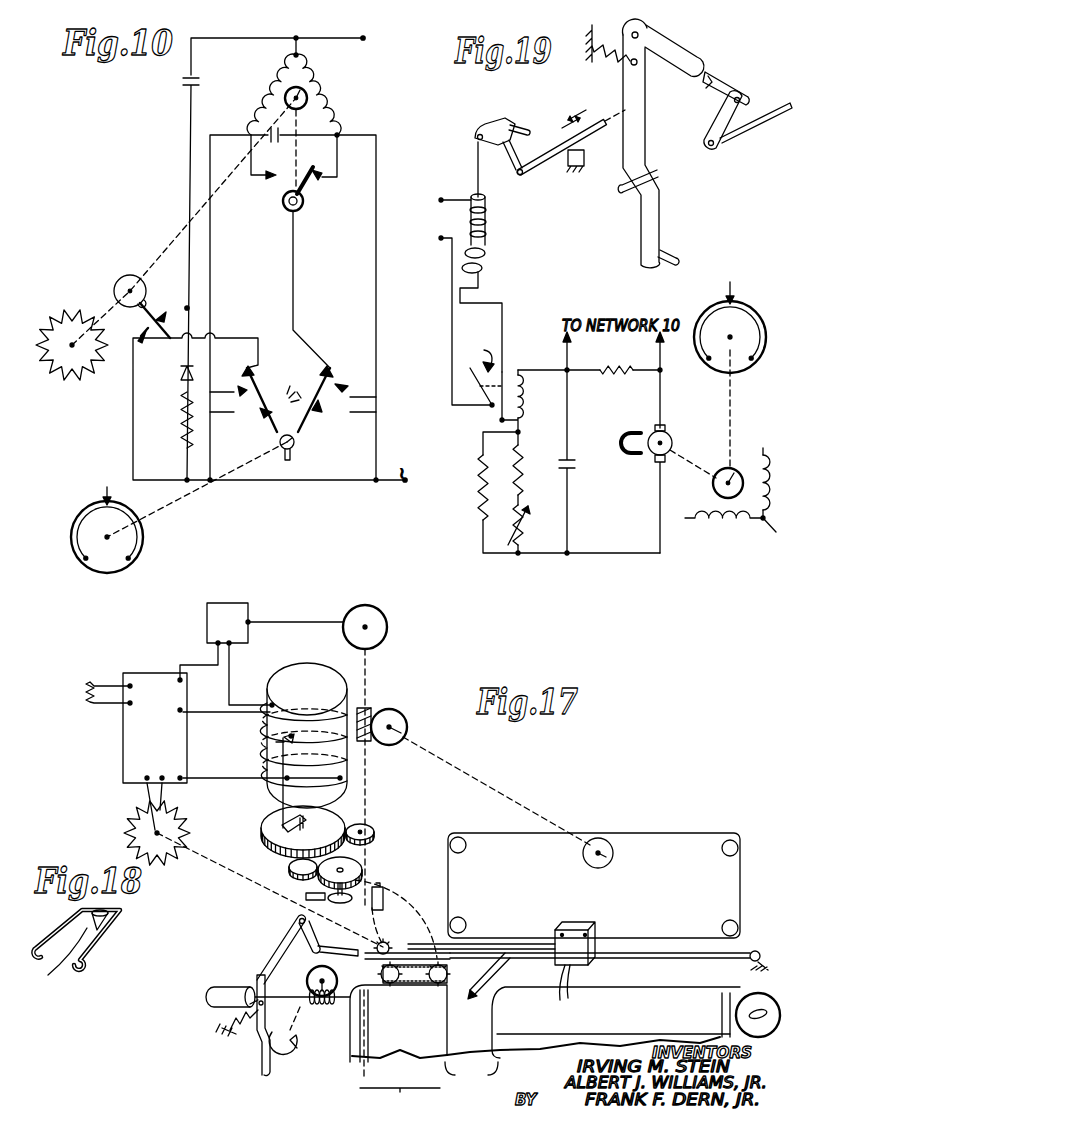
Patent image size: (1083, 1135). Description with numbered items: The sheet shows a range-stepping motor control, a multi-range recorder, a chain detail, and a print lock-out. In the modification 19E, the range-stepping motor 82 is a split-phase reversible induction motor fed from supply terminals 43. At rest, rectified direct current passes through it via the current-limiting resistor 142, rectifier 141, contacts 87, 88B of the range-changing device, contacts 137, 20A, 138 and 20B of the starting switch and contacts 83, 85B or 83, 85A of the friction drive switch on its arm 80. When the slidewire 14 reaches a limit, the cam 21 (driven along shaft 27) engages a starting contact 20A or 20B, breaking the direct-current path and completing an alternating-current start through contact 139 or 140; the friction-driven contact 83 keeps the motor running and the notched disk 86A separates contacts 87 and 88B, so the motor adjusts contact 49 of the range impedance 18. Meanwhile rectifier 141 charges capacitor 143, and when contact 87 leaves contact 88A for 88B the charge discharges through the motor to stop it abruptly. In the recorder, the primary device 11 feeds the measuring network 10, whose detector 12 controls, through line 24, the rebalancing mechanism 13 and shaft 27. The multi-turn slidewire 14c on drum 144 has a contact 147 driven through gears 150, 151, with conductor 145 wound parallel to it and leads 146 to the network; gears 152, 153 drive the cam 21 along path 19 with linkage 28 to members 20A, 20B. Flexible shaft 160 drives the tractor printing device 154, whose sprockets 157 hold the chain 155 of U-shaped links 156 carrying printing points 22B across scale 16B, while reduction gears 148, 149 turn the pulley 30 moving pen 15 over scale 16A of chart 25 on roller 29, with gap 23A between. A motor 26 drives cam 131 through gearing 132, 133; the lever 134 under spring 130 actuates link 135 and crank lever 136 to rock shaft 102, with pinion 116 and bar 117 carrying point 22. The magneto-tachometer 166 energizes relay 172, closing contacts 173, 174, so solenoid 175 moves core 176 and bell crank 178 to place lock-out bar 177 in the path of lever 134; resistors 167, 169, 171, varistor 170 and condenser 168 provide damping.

In FIG. 17, the measuring network 10 is at (163, 733).
In FIG. 17, the primary device 11 is at (82, 690).
In FIG. 17, the detector 12 is at (237, 629).
In FIG. 17, the rebalancing mechanism 13 is at (366, 604).
In FIG. 10, the slidewire 14 is at (71, 538).
In FIG. 19, the slidewire 14 is at (748, 314).
In FIG. 17, the multi-turn slidewire 14c is at (264, 752).
In FIG. 17, the pen 15 is at (570, 975).
In FIG. 17, the scale 16A is at (593, 1022).
In FIG. 17, the scale 16B is at (398, 1046).
In FIG. 10, the range impedance 18 is at (66, 378).
In FIG. 17, the range impedance 18 is at (163, 850).
In FIG. 17, the arc path 19 is at (394, 893).
In FIG. 10, the modification 19E is at (350, 254).
In FIG. 10, the starting contact 20A is at (262, 418).
In FIG. 17, the starting contact 20A is at (349, 909).
In FIG. 10, the starting contact 20B is at (314, 412).
In FIG. 17, the starting contact 20B is at (380, 886).
In FIG. 10, the cam 21 is at (298, 451).
In FIG. 17, the cam 21 is at (306, 896).
In FIG. 17, the printing point 22 is at (472, 1000).
In FIG. 17, the printing points 22B is at (386, 1000).
In FIG. 18, the printing points 22B is at (50, 972).
In FIG. 17, the gap 23A is at (471, 1076).
In FIG. 17, the line 24 is at (285, 623).
In FIG. 17, the chart 25 is at (372, 1062).
In FIG. 17, the motor 26 is at (208, 997).
In FIG. 10, the rebalancing shaft 27 is at (197, 495).
In FIG. 17, the rebalancing shaft 27 is at (367, 662).
In FIG. 17, the linkage 28 is at (240, 880).
In FIG. 17, the drum 29 is at (758, 993).
In FIG. 17, the driving pulley 30 is at (613, 855).
In FIG. 10, the supply terminal 43 is at (338, 32).
In FIG. 10, the contact 49 is at (86, 318).
In FIG. 10, the shaft 80 is at (293, 216).
In FIG. 10, the stepping motor 82 is at (342, 97).
In FIG. 19, the stepping motor 82 is at (758, 453).
In FIG. 10, the friction-driven contact 83 is at (303, 205).
In FIG. 10, the contact 85A is at (275, 178).
In FIG. 10, the contact 85B is at (324, 180).
In FIG. 10, the notched disk 86A is at (119, 276).
In FIG. 10, the contact 87 is at (152, 300).
In FIG. 10, the contact 88A is at (143, 342).
In FIG. 10, the contact 88B is at (165, 316).
In FIG. 19, the shaft 102 is at (760, 130).
In FIG. 17, the shaft 102 is at (655, 960).
In FIG. 17, the pinion 116 is at (390, 943).
In FIG. 17, the bar 117 is at (505, 960).
In FIG. 19, the biasing spring 130 is at (608, 68).
In FIG. 17, the notched disk 131 is at (298, 1040).
In FIG. 17, the gearing 132 is at (330, 965).
In FIG. 17, the gearing 133 is at (322, 1010).
In FIG. 19, the lever 134 is at (640, 142).
In FIG. 17, the lever 134 is at (255, 985).
In FIG. 19, the link 135 is at (730, 80).
In FIG. 17, the link 135 is at (290, 940).
In FIG. 19, the crank lever 136 is at (713, 118).
In FIG. 17, the crank lever 136 is at (306, 948).
In FIG. 10, the contact 137 is at (252, 366).
In FIG. 10, the contact 138 is at (324, 370).
In FIG. 10, the contact 139 is at (346, 392).
In FIG. 10, the contact 140 is at (240, 390).
In FIG. 10, the rectifier 141 is at (180, 376).
In FIG. 10, the current-limiting resistor 142 is at (180, 430).
In FIG. 10, the capacitor 143 is at (182, 84).
In FIG. 17, the drum 144 is at (298, 680).
In FIG. 17, the conductor 145 is at (268, 758).
In FIG. 17, the lead 146 is at (232, 703).
In FIG. 17, the movable contact 147 is at (284, 736).
In FIG. 17, the reduction gearing 148 is at (372, 712).
In FIG. 17, the reduction gearing 149 is at (400, 718).
In FIG. 17, the gear 150 is at (368, 825).
In FIG. 17, the gear 151 is at (330, 815).
In FIG. 17, the gear 152 is at (288, 866).
In FIG. 17, the gear 153 is at (360, 865).
In FIG. 17, the tractor printing device 154 is at (418, 1013).
In FIG. 17, the endless chain 155 is at (420, 1000).
In FIG. 18, the U-shaped links 156 is at (100, 940).
In FIG. 17, the sprockets 157 is at (383, 972).
In FIG. 17, the flexible shaft 160 is at (420, 906).
In FIG. 19, the magneto-tachometer 166 is at (670, 432).
In FIG. 19, the resistor 167 is at (618, 377).
In FIG. 19, the condenser 168 is at (575, 472).
In FIG. 19, the resistor 169 is at (526, 460).
In FIG. 19, the varistor 170 is at (526, 520).
In FIG. 19, the resistor 171 is at (478, 500).
In FIG. 19, the sensitive relay 172 is at (524, 400).
In FIG. 19, the relay contact 173 is at (477, 387).
In FIG. 19, the relay contact 174 is at (477, 354).
In FIG. 19, the solenoid 175 is at (488, 252).
In FIG. 19, the core 176 is at (468, 196).
In FIG. 19, the lock-out bar 177 is at (535, 170).
In FIG. 19, the bell crank lever 178 is at (488, 118).